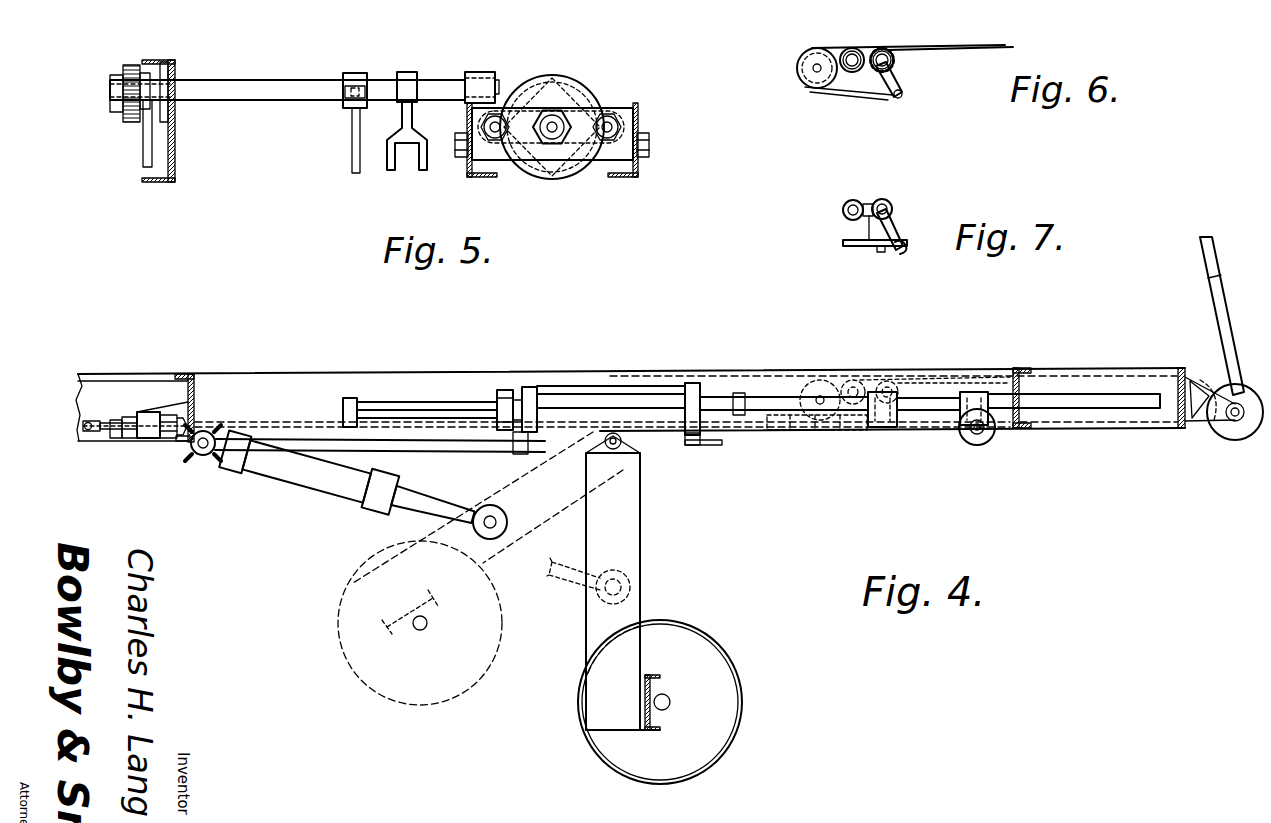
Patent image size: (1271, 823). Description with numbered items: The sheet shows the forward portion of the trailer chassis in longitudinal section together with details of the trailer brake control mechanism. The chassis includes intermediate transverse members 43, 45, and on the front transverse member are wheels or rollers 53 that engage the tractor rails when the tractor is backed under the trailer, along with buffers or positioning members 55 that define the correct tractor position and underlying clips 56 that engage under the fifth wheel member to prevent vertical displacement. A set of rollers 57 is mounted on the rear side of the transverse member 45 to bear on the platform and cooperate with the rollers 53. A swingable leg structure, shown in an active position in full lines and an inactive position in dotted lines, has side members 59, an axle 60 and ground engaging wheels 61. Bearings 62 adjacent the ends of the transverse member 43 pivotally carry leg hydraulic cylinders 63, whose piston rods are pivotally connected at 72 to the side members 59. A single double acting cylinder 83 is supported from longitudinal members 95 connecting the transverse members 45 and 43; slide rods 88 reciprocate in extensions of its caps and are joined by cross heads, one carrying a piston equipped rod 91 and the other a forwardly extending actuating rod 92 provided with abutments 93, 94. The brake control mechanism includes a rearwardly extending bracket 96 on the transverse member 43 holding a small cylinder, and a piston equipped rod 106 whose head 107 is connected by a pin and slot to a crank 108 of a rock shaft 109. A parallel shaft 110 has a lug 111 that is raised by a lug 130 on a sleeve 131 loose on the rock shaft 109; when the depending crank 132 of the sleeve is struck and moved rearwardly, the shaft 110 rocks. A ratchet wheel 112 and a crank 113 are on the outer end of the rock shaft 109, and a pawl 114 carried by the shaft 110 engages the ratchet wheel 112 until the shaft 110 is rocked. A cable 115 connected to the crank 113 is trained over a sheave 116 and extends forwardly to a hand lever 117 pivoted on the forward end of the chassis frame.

In FIG. 4, the intermediate transverse member 43 is at (194, 392).
In FIG. 4, the intermediate transverse member 45 is at (1024, 376).
In FIG. 4, the wheels or rollers 53 is at (1232, 440).
In FIG. 4, the buffers or positioning members 55 is at (1186, 377).
In FIG. 4, the underlying clips 56 is at (703, 446).
In FIG. 4, the wheels or rollers 57 is at (981, 447).
In FIG. 4, the side members 59 is at (635, 525).
In FIG. 4, the axle 60 is at (655, 677).
In FIG. 4, the ground engaging wheels 61 is at (738, 676).
In FIG. 4, the bearings 62 is at (195, 453).
In FIG. 4, the leg hydraulic cylinders 63 is at (312, 480).
In FIG. 4, the pivotal connection 72 is at (484, 508).
In FIG. 4, the double acting cylinder 83 is at (633, 394).
In FIG. 4, the slide rods 88 is at (580, 405).
In FIG. 4, the piston equipped rod 91 is at (432, 399).
In FIG. 4, the actuating rod 92 is at (762, 411).
In FIG. 4, the abutment 93 is at (884, 430).
In FIG. 4, the abutment 94 is at (964, 428).
In FIG. 5, the longitudinal members 95 is at (471, 172).
In FIG. 4, the bracket 96 is at (152, 412).
In FIG. 7, the piston equipped rod 106 is at (845, 246).
In FIG. 4, the piston equipped rod 106 is at (858, 433).
In FIG. 7, the head 107 is at (906, 249).
In FIG. 5, the crank 108 is at (416, 168).
In FIG. 7, the crank 108 is at (898, 226).
In FIG. 5, the rock shaft 109 is at (262, 92).
In FIG. 6, the rock shaft 109 is at (890, 52).
In FIG. 7, the rock shaft 109 is at (890, 200).
In FIG. 4, the rock shaft 109 is at (896, 379).
In FIG. 6, the shaft 110 is at (852, 70).
In FIG. 7, the shaft 110 is at (843, 212).
In FIG. 4, the shaft 110 is at (825, 380).
In FIG. 7, the lug 111 is at (868, 203).
In FIG. 5, the ratchet wheel 112 is at (118, 88).
In FIG. 6, the ratchet wheel 112 is at (882, 49).
In FIG. 5, the crank 113 is at (143, 152).
In FIG. 6, the crank 113 is at (900, 80).
In FIG. 6, the pawl 114 is at (851, 49).
In FIG. 6, the cable 115 is at (972, 45).
In FIG. 4, the cable 115 is at (978, 376).
In FIG. 6, the sheave 116 is at (805, 70).
In FIG. 4, the hand lever 117 is at (1224, 327).
In FIG. 5, the lug 130 is at (340, 108).
In FIG. 7, the lug 130 is at (866, 247).
In FIG. 5, the sleeve 131 is at (352, 73).
In FIG. 5, the depending crank 132 is at (352, 165).
In FIG. 7, the depending crank 132 is at (880, 252).